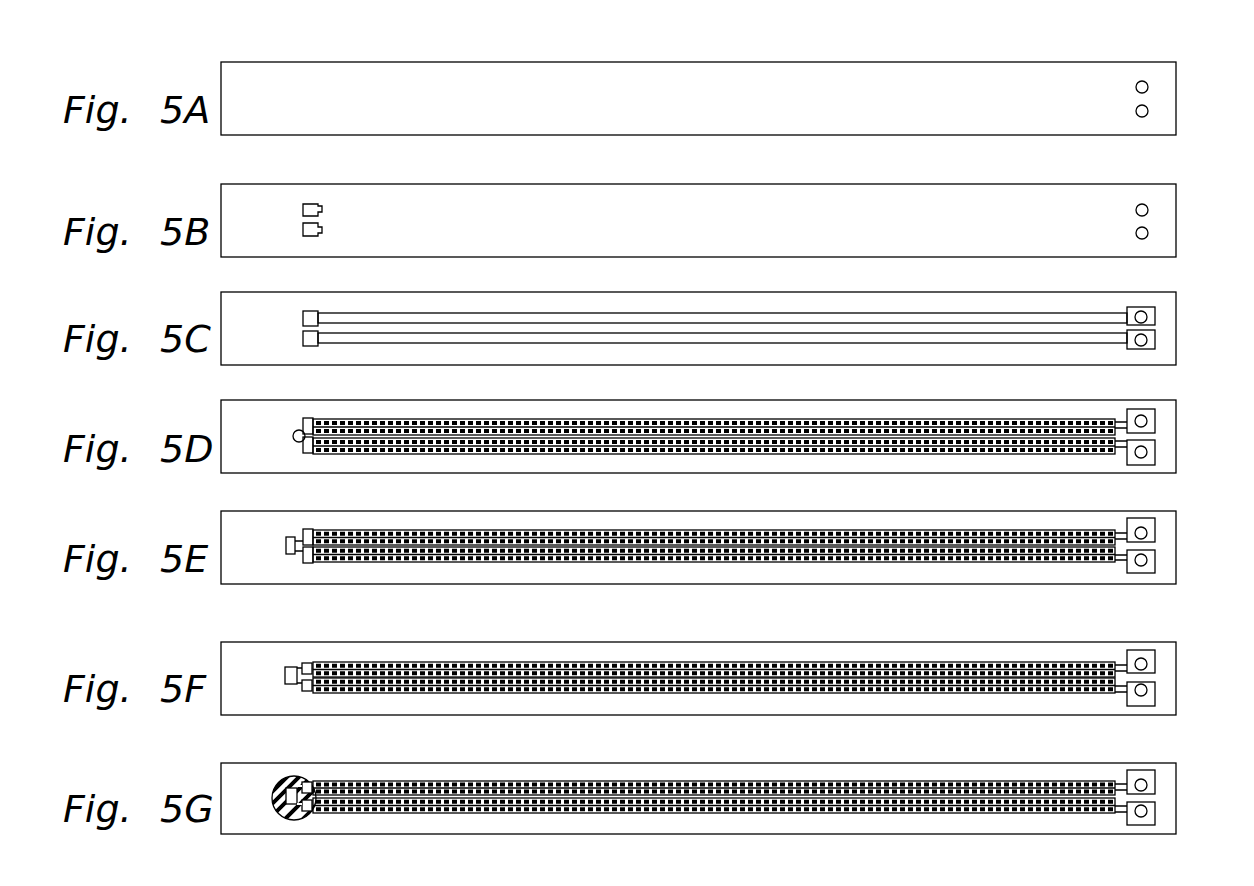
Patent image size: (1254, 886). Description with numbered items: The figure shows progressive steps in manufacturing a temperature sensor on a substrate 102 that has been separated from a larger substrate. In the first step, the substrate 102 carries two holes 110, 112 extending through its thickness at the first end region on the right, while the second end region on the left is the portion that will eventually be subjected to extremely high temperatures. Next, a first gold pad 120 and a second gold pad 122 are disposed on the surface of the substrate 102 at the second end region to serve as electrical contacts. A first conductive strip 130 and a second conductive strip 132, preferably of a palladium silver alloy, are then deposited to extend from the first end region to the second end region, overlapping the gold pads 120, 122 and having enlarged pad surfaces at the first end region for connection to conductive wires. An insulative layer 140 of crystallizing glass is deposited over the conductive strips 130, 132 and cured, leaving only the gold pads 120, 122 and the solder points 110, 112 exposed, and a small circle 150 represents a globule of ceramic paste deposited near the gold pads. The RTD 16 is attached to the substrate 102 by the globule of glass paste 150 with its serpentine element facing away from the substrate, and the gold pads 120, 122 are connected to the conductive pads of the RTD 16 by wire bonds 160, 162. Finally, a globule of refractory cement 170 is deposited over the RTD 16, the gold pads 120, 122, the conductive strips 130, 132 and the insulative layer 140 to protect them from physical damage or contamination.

In FIG. 5A, the substrate 102 is at (900, 62).
In FIG. 5B, the substrate 102 is at (636, 184).
In FIG. 5C, the substrate 102 is at (638, 292).
In FIG. 5D, the substrate 102 is at (862, 400).
In FIG. 5E, the substrate 102 is at (745, 511).
In FIG. 5F, the substrate 102 is at (866, 642).
In FIG. 5G, the substrate 102 is at (680, 763).
In FIG. 5A, the hole 110 is at (1148, 110).
In FIG. 5B, the hole 110 is at (1142, 233).
In FIG. 5C, the hole 110 is at (1150, 341).
In FIG. 5D, the hole 110 is at (1141, 452).
In FIG. 5E, the hole 110 is at (1150, 561).
In FIG. 5F, the hole 110 is at (1150, 691).
In FIG. 5G, the hole 110 is at (1141, 813).
In FIG. 5A, the hole 112 is at (1148, 82).
In FIG. 5B, the hole 112 is at (1142, 210).
In FIG. 5C, the hole 112 is at (1148, 317).
In FIG. 5D, the hole 112 is at (1141, 421).
In FIG. 5E, the hole 112 is at (1148, 532).
In FIG. 5F, the hole 112 is at (1148, 664).
In FIG. 5G, the hole 112 is at (1141, 782).
In FIG. 5B, the first gold pad 120 is at (322, 230).
In FIG. 5C, the first gold pad 120 is at (306, 346).
In FIG. 5D, the first gold pad 120 is at (308, 453).
In FIG. 5E, the first gold pad 120 is at (308, 563).
In FIG. 5F, the first gold pad 120 is at (312, 690).
In FIG. 5B, the second gold pad 122 is at (320, 206).
In FIG. 5C, the second gold pad 122 is at (306, 311).
In FIG. 5D, the second gold pad 122 is at (305, 418).
In FIG. 5E, the second gold pad 122 is at (308, 530).
In FIG. 5F, the second gold pad 122 is at (312, 664).
In FIG. 5C, the first conductive strip 130 is at (450, 343).
In FIG. 5C, the second conductive strip 132 is at (446, 313).
In FIG. 5D, the insulative layer 140 is at (620, 419).
In FIG. 5E, the insulative layer 140 is at (580, 530).
In FIG. 5F, the insulative layer 140 is at (530, 662).
In FIG. 5G, the insulative layer 140 is at (535, 781).
In FIG. 5D, the globule of ceramic paste 150 is at (296, 441).
In FIG. 5E, the RTD 16 is at (290, 554).
In FIG. 5F, the RTD 16 is at (286, 684).
In FIG. 5F, the wire bond 160 is at (298, 686).
In FIG. 5F, the wire bond 162 is at (305, 662).
In FIG. 5G, the refractory cement 170 is at (298, 820).